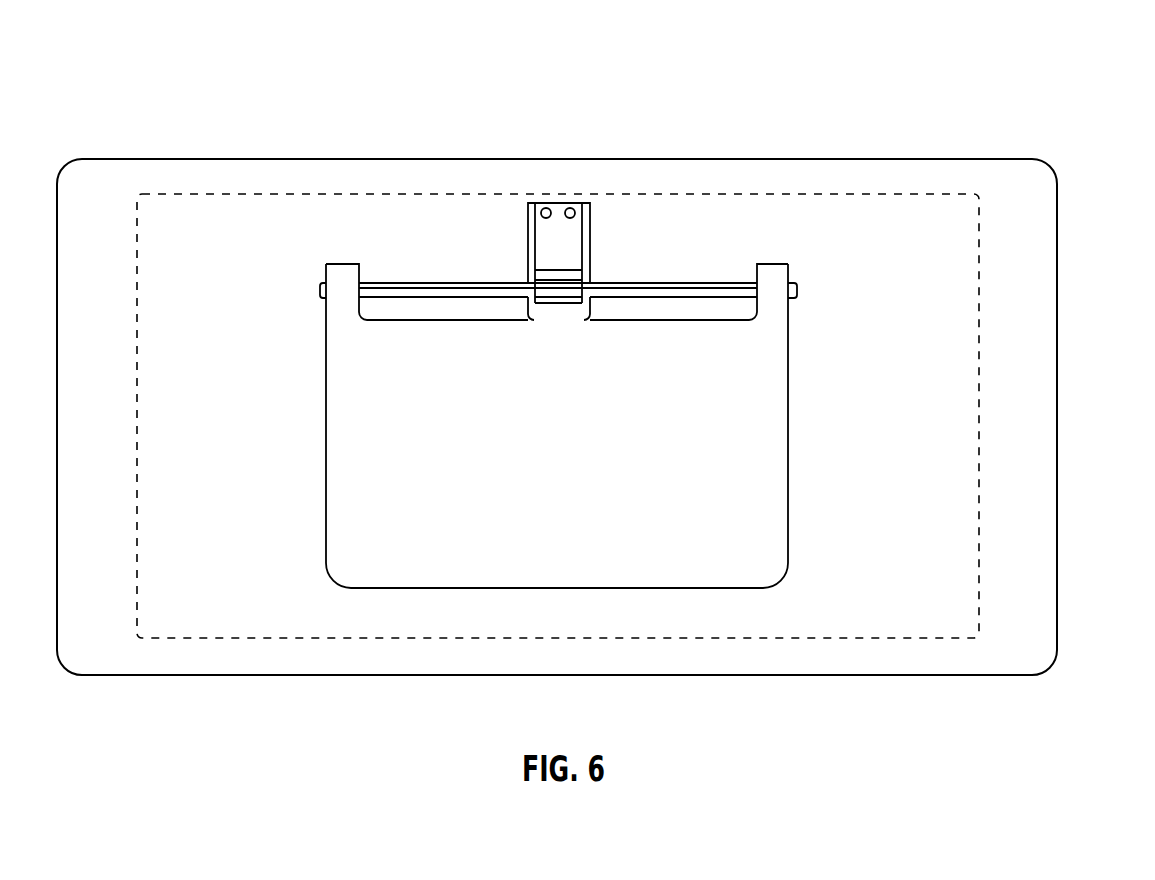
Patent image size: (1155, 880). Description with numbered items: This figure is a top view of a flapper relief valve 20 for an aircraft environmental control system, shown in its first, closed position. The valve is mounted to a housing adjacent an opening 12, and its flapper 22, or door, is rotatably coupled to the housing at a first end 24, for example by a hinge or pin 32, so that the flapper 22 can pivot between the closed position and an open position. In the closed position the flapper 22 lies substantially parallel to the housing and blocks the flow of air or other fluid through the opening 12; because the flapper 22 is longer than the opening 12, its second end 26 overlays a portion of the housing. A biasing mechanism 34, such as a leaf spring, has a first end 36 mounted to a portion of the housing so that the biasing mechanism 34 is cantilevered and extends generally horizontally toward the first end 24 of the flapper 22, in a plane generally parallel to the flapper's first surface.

The opening 12 is at (144, 180).
The flapper relief valve 20 is at (1052, 98).
The flapper 22 is at (345, 473).
The first end 24 is at (345, 268).
The second end 26 is at (351, 590).
The pin 32 is at (321, 290).
The biasing mechanism 34 is at (569, 249).
The first end of biasing mechanism 36 is at (558, 205).